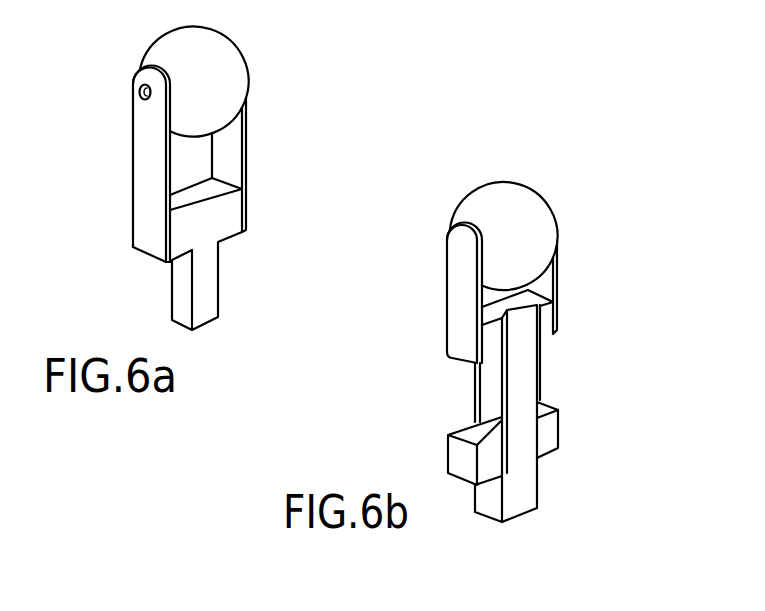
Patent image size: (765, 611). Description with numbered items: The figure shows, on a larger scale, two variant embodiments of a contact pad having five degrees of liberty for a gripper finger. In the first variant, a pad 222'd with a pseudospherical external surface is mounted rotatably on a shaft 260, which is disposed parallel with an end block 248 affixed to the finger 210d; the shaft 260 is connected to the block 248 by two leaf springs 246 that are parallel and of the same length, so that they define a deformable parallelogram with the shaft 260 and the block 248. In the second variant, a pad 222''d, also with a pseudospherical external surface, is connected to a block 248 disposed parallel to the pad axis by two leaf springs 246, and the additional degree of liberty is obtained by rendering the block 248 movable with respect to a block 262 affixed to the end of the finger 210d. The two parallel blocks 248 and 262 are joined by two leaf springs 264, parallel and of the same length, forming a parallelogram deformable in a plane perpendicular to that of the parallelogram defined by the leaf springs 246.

In FIG. 6a, the pad 222'd is at (242, 81).
In FIG. 6b, the pad 222''d is at (547, 232).
In FIG. 6a, the leaf springs 246 is at (232, 158).
In FIG. 6b, the leaf springs 246 is at (547, 280).
In FIG. 6a, the shaft 260 is at (139, 90).
In FIG. 6a, the block 248 is at (183, 230).
In FIG. 6b, the block 248 is at (547, 315).
In FIG. 6a, the finger 210d is at (180, 303).
In FIG. 6b, the finger 210d is at (523, 489).
In FIG. 6b, the leaf springs 264 is at (533, 380).
In FIG. 6b, the block 262 is at (455, 455).